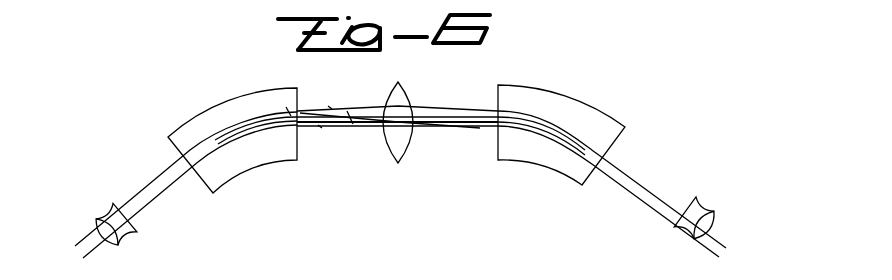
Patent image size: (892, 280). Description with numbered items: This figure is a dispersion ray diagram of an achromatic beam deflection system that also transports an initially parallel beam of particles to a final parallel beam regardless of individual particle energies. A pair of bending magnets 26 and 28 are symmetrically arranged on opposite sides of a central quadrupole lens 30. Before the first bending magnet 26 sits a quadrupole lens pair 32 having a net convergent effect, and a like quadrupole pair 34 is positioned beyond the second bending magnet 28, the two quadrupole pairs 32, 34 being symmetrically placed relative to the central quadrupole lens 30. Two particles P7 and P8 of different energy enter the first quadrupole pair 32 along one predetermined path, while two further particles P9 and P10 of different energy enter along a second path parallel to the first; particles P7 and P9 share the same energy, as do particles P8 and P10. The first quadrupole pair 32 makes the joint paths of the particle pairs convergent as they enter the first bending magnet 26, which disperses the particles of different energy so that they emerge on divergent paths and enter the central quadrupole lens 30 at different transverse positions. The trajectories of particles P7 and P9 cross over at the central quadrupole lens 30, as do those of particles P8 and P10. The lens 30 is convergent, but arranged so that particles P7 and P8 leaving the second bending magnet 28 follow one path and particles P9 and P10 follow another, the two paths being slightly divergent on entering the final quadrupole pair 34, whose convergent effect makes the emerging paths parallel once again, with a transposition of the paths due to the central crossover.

The first bending magnet 26 is at (228, 104).
The second bending magnet 28 is at (565, 97).
The central quadrupole lens 30 is at (407, 92).
The first quadrupole lens pair 32 is at (100, 222).
The final quadrupole pair 34 is at (710, 212).
The particle P7 is at (320, 127).
The particle P8 is at (350, 121).
The particle P9 is at (290, 110).
The particle P10 is at (330, 107).